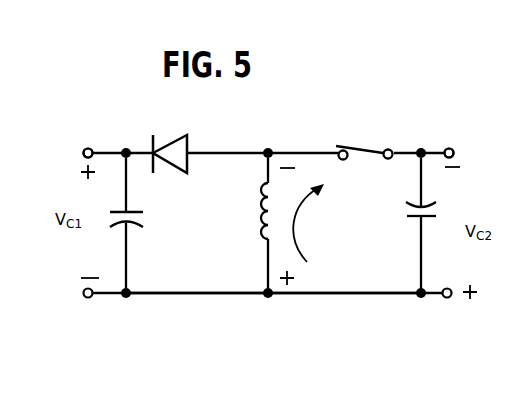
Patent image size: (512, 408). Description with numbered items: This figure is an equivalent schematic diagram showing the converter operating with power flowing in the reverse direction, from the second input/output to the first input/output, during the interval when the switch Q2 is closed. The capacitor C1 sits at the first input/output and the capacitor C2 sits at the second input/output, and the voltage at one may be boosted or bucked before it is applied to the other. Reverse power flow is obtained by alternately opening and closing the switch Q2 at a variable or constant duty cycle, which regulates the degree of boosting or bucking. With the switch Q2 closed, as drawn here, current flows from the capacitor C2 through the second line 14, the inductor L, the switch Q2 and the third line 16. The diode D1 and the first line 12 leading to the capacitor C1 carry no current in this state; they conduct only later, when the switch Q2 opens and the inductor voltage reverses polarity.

The first line 12 is at (103, 153).
The second line 14 is at (361, 294).
The third line 16 is at (433, 150).
The diode D1 is at (170, 137).
The capacitor C1 is at (139, 226).
The capacitor C2 is at (430, 204).
The inductor L is at (258, 216).
The switch Q2 is at (363, 148).